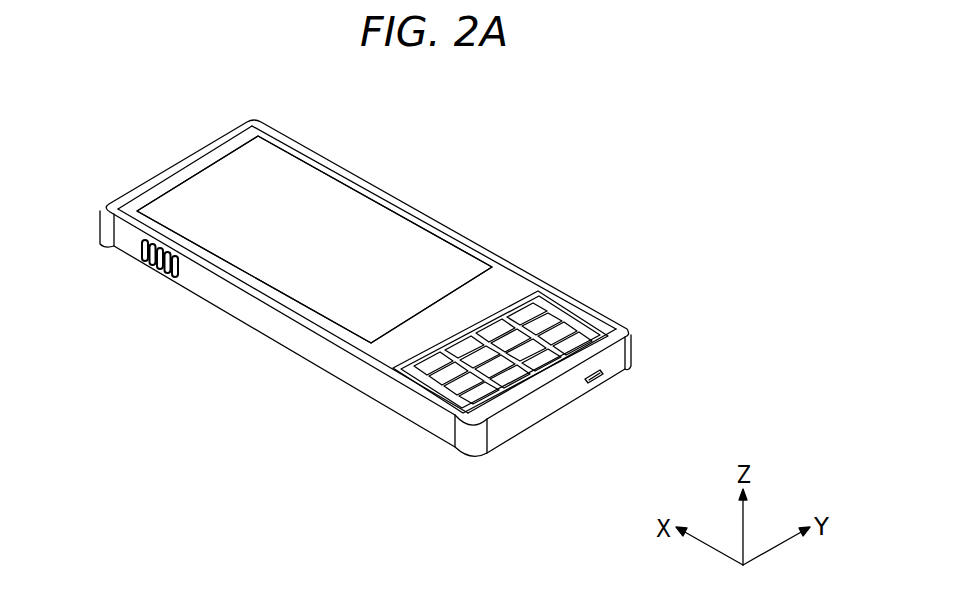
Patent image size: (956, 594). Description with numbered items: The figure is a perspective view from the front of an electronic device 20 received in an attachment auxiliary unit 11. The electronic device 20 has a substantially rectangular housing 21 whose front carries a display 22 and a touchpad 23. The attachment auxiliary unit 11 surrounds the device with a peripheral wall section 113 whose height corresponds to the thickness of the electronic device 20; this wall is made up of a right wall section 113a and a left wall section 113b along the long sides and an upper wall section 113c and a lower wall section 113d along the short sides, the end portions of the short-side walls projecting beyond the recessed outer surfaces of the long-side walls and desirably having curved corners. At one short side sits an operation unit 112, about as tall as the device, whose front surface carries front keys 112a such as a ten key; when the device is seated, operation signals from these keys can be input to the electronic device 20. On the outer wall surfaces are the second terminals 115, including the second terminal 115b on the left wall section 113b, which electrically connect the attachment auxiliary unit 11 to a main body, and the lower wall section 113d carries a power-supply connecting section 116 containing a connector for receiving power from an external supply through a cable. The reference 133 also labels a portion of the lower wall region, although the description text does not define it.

The attachment auxiliary unit 11 is at (347, 299).
The electronic device 20 is at (328, 210).
The housing 21 is at (524, 313).
The display 22 is at (328, 239).
The touchpad 23 is at (415, 272).
The operation unit 112 is at (534, 317).
The front keys 112a is at (577, 333).
The peripheral wall section 113 is at (367, 304).
The right wall section 113a is at (407, 207).
The left wall section 113b is at (233, 300).
The upper wall section 113c is at (158, 177).
The lower wall section 113d is at (540, 412).
The second terminals 115 is at (108, 277).
The second terminal 115b is at (141, 249).
The power-supply connecting section 116 is at (604, 382).
The side wall portion 133 is at (540, 425).